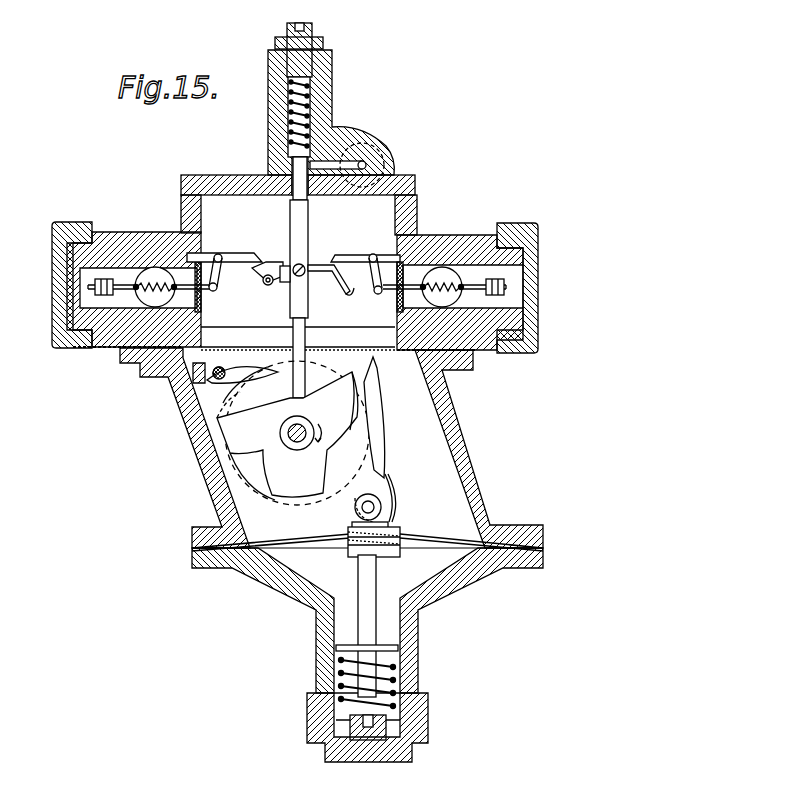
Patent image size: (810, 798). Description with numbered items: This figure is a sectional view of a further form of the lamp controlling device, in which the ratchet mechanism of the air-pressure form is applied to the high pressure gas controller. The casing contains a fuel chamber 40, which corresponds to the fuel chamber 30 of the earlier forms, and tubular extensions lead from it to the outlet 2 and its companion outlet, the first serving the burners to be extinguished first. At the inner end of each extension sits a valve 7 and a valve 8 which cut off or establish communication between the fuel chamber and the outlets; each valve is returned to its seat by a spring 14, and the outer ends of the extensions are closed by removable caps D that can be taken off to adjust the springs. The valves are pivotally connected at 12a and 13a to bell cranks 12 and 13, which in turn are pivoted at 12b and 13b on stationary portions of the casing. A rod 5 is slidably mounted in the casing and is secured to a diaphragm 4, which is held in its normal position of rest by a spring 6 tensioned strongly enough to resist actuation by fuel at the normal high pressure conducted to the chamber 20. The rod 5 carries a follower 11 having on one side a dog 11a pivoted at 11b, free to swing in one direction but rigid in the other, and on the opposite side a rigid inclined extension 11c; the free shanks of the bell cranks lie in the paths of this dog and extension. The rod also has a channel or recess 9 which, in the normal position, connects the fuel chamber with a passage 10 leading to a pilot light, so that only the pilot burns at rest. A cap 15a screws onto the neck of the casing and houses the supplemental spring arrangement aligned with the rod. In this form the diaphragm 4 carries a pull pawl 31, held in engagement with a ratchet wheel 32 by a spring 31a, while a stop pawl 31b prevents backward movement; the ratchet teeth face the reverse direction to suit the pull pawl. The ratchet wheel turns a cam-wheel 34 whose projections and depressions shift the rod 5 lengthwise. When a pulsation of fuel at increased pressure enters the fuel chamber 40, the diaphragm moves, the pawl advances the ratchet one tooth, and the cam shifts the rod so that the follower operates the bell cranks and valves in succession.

The outlet 2 is at (153, 272).
The diaphragm 4 is at (437, 542).
The rod 5 is at (297, 300).
The spring 6 is at (345, 665).
The valve 7 is at (396, 297).
The valve 8 is at (200, 298).
The channel or recess 9 is at (305, 200).
The passage 10 is at (338, 166).
The follower 11 is at (318, 264).
The dog 11a is at (270, 266).
The pivot 11b is at (262, 282).
The rigid inclined extension 11c is at (344, 294).
The bell crank 12 is at (232, 257).
The pivotal connection 12a is at (218, 256).
The pivot 12b is at (217, 290).
The bell crank 13 is at (352, 258).
The pivotal connection 13a is at (376, 246).
The pivot 13b is at (374, 288).
The spring 14 is at (126, 330).
The cap 15a is at (428, 718).
The chamber 20 is at (317, 576).
The fuel chamber 30 is at (385, 207).
The pawl 31 is at (376, 413).
The spring 31a is at (392, 501).
The stop pawl 31b is at (228, 372).
The ratchet wheel 32 is at (245, 452).
The cam-wheel 34 is at (226, 412).
The fuel chamber 40 is at (430, 433).
The removable cap D is at (60, 296).